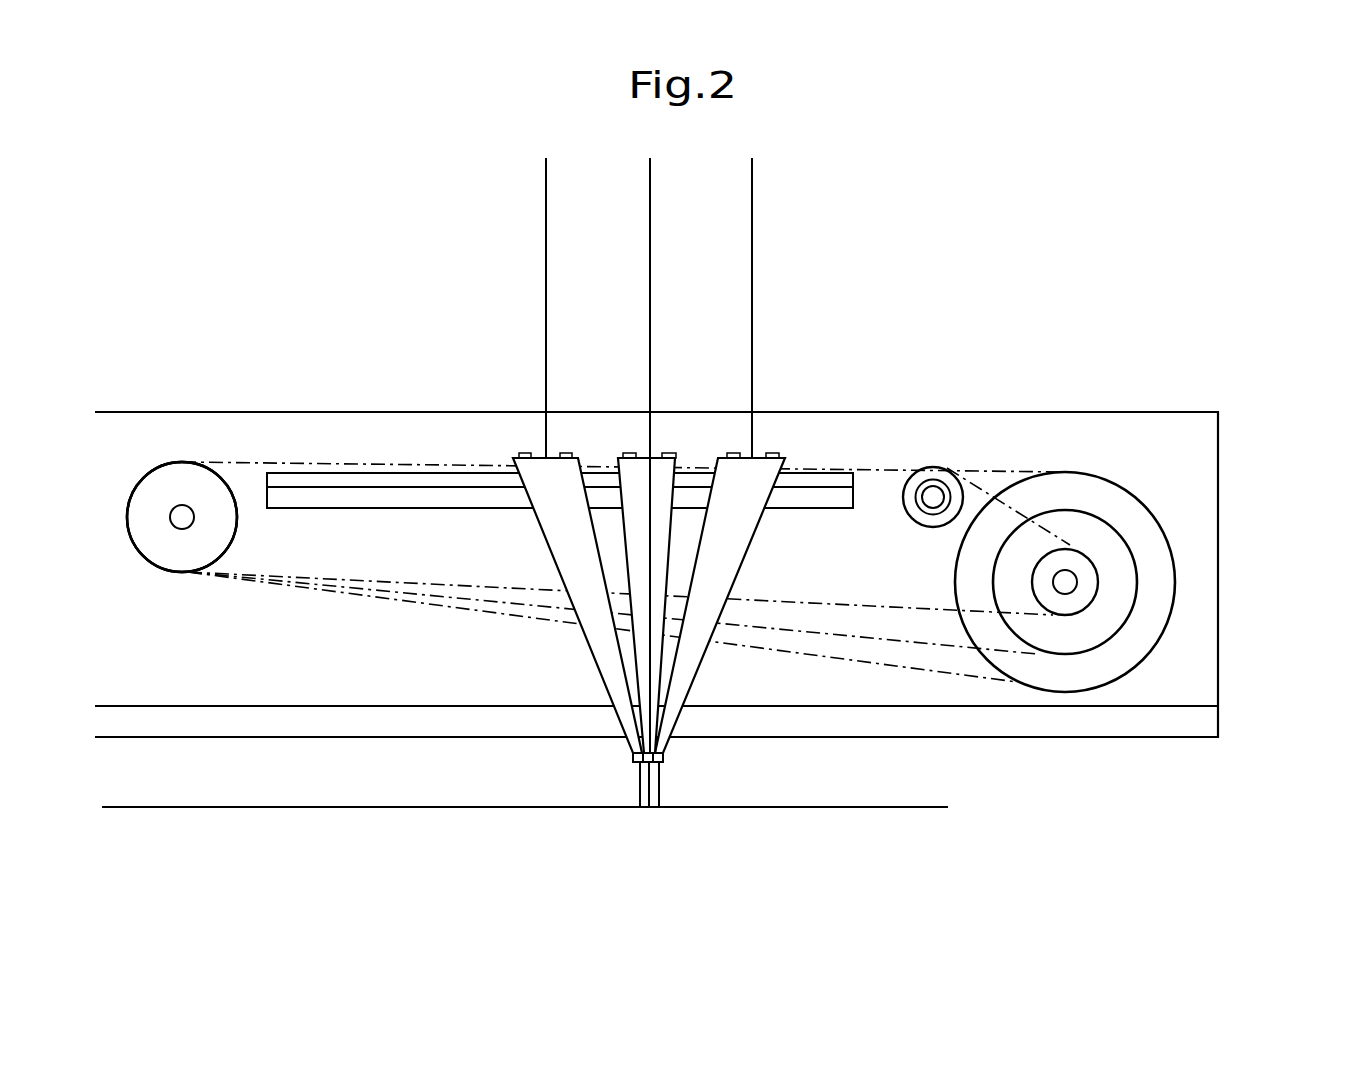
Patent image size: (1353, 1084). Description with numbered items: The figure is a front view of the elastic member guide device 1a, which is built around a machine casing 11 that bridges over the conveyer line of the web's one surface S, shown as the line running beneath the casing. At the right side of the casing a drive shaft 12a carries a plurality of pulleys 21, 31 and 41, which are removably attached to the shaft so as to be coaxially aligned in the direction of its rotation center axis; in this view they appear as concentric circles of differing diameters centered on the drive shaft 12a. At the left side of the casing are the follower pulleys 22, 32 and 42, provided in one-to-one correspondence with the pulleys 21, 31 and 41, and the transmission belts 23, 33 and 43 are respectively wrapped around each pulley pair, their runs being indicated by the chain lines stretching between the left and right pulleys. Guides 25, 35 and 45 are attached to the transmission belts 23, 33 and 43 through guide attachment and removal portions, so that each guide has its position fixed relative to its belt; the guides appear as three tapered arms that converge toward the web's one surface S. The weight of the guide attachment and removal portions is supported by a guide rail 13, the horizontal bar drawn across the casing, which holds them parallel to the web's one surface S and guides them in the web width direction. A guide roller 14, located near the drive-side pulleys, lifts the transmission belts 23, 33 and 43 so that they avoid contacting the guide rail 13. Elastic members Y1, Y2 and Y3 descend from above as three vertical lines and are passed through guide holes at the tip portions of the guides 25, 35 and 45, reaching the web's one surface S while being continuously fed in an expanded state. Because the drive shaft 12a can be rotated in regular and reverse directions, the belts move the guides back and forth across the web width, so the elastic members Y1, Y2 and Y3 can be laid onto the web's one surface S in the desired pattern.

The elastic member guide device 1a is at (893, 305).
The machine casing 11 is at (1187, 450).
The drive shaft 12a is at (1070, 581).
The guide rail 13 is at (316, 498).
The guide roller 14 is at (930, 470).
The pulley 21 is at (1172, 613).
The follower pulley 22 is at (160, 535).
The transmission belt 23 is at (797, 655).
The guide 25 is at (607, 672).
The pulley 31 is at (1113, 528).
The follower pulley 32 is at (182, 517).
The transmission belt 33 is at (863, 632).
The guide 35 is at (647, 680).
The pulley 41 is at (1088, 608).
The follower pulley 42 is at (182, 517).
The transmission belt 43 is at (917, 608).
The guide 45 is at (697, 655).
The web's one surface S is at (337, 808).
The elastic member Y1 is at (546, 264).
The elastic member Y2 is at (650, 265).
The elastic member Y3 is at (752, 265).